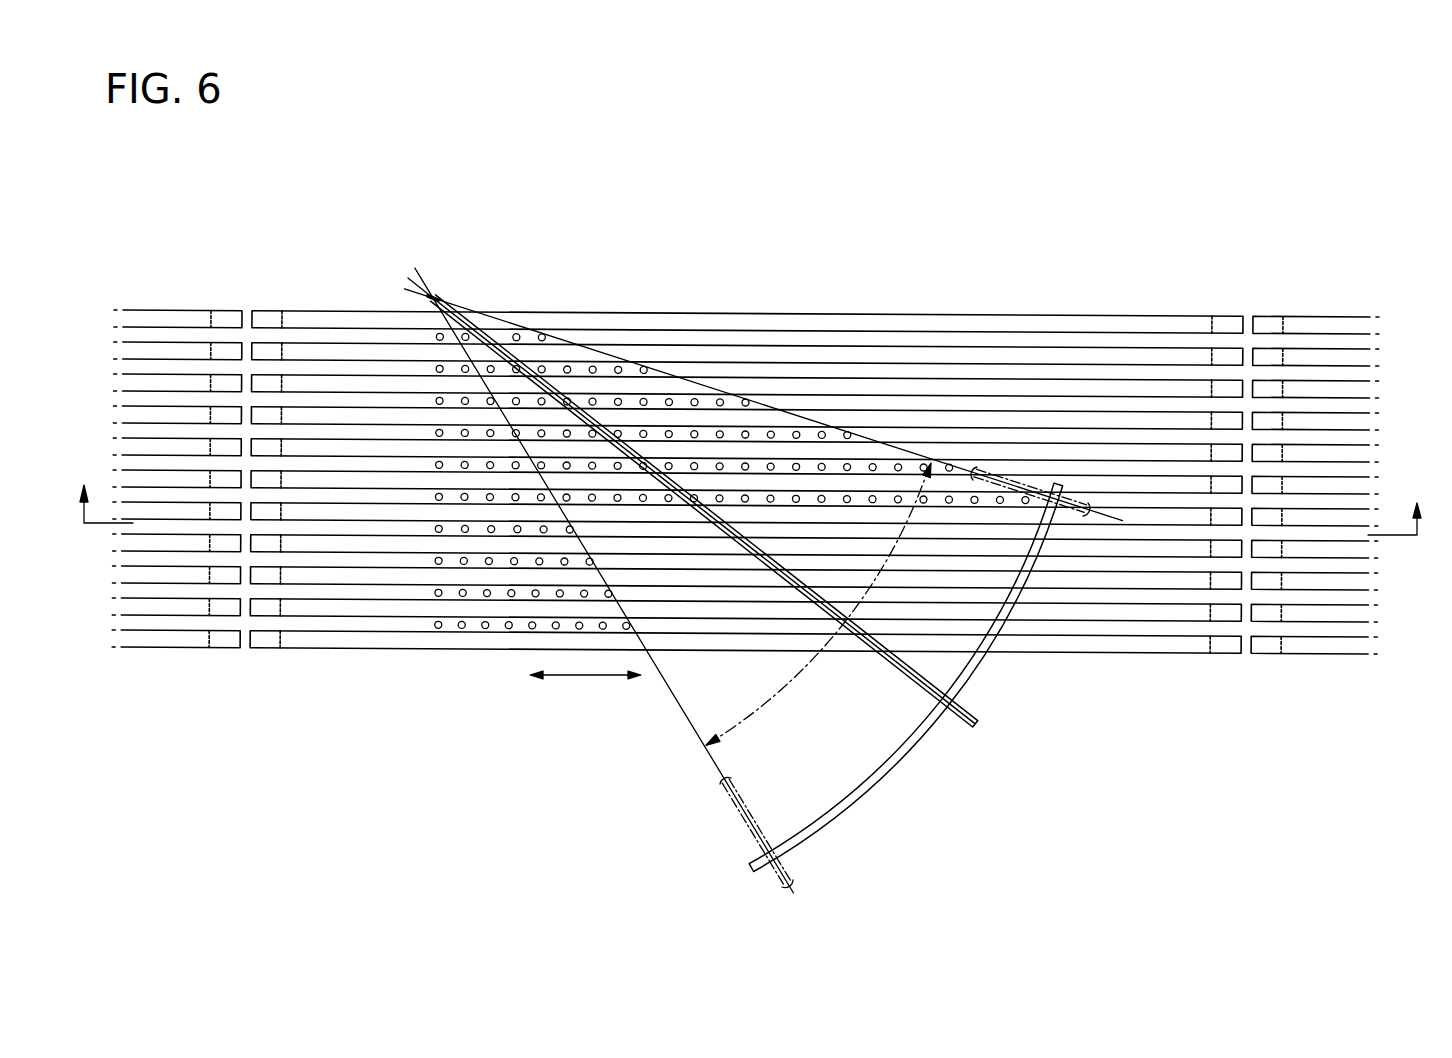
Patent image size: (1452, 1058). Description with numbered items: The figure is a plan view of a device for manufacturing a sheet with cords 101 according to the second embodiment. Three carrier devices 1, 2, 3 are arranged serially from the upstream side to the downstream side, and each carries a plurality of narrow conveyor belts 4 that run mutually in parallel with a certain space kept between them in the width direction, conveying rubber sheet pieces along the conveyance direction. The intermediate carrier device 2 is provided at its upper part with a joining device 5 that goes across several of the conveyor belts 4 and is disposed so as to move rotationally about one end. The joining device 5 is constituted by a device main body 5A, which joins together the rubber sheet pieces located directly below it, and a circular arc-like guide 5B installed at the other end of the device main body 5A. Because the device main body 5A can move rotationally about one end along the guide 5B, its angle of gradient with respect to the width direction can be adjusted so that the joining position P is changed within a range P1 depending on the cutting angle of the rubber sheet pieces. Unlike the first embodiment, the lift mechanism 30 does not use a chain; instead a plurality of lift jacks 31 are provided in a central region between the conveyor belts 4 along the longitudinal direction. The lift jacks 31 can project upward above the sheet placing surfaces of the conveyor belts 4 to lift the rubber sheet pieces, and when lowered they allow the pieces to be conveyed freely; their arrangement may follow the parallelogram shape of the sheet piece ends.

The carrier device 1 is at (1307, 312).
The carrier device 2 is at (960, 310).
The carrier device 3 is at (184, 306).
The narrow conveyor belt 4 is at (372, 387).
The joining device 5 is at (509, 355).
The device main body 5A is at (556, 390).
The circular arc-like guide 5B is at (898, 772).
The lift mechanism 30 is at (504, 625).
The lift jack 31 is at (437, 625).
The device for manufacturing a sheet with cords 101 is at (592, 748).
The joining position P is at (637, 453).
The range P1 is at (742, 720).